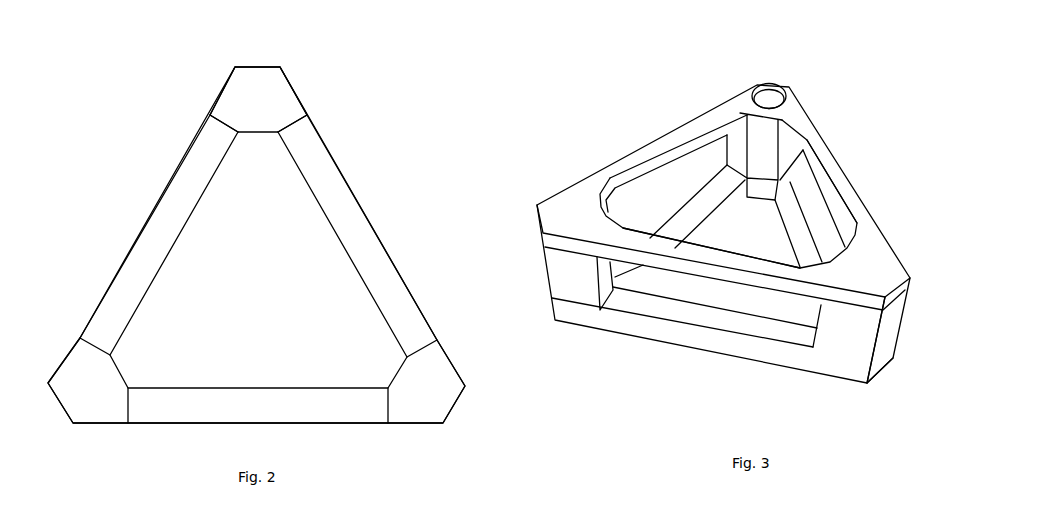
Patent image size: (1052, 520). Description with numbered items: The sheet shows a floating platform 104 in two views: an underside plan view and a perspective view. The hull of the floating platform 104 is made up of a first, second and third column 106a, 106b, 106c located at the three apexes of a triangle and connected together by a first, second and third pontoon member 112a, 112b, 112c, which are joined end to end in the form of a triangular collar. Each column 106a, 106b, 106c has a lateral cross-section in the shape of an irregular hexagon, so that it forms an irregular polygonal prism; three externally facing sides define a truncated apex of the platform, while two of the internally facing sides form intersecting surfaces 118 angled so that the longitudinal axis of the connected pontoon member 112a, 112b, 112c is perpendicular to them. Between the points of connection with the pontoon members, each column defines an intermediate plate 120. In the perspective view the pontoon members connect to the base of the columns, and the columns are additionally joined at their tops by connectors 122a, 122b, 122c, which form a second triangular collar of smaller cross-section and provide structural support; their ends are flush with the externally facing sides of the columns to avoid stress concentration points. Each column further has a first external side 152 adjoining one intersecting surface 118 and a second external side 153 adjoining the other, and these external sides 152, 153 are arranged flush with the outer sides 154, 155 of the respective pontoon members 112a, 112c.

In FIG. 2, the floating platform 104 is at (368, 172).
In FIG. 3, the floating platform 104 is at (635, 93).
In FIG. 2, the first column 106a is at (255, 75).
In FIG. 3, the first column 106a is at (760, 150).
In FIG. 2, the second column 106b is at (433, 387).
In FIG. 3, the second column 106b is at (573, 280).
In FIG. 2, the third column 106c is at (77, 367).
In FIG. 3, the third column 106c is at (850, 347).
In FIG. 2, the first pontoon member 112a is at (152, 228).
In FIG. 2, the second pontoon member 112b is at (260, 393).
In FIG. 2, the third pontoon member 112c is at (363, 245).
In FIG. 3, the intersecting surface 118 is at (787, 150).
In FIG. 3, the intermediate plate 120 is at (768, 173).
In FIG. 3, the first connector 122a is at (857, 207).
In FIG. 3, the second connector 122b is at (715, 260).
In FIG. 3, the third connector 122c is at (650, 152).
In FIG. 2, the first external side 152 is at (220, 88).
In FIG. 2, the second external side 153 is at (297, 88).
In FIG. 2, the outer side of pontoon member 154 is at (200, 127).
In FIG. 2, the outer side of pontoon member 155 is at (320, 128).